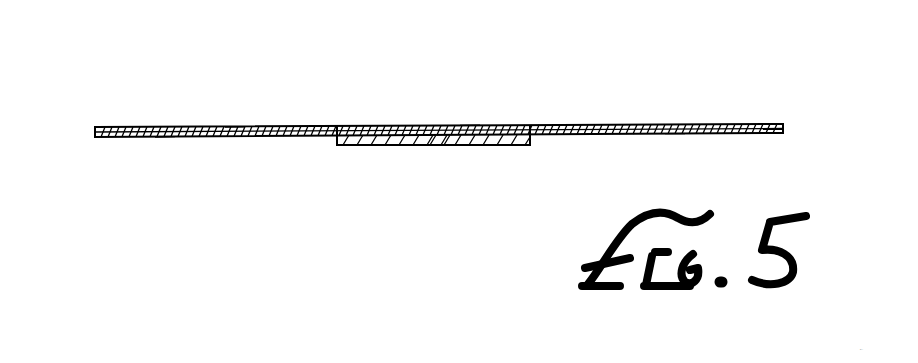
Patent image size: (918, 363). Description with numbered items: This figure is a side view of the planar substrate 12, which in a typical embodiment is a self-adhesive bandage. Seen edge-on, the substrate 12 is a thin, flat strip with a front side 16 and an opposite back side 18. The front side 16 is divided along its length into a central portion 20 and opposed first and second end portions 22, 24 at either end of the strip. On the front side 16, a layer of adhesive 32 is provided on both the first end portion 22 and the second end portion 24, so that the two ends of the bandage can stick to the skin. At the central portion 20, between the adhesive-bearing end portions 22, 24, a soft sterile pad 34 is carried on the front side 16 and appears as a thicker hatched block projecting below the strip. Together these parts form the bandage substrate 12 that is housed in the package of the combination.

The planar substrate 12 is at (475, 50).
The front side 16 is at (272, 149).
The back side 18 is at (244, 118).
The central portion 20 is at (410, 218).
The first end portion 22 is at (172, 148).
The second end portion 24 is at (683, 143).
The layer of adhesive 32 is at (108, 140).
The soft sterile pad 34 is at (442, 140).